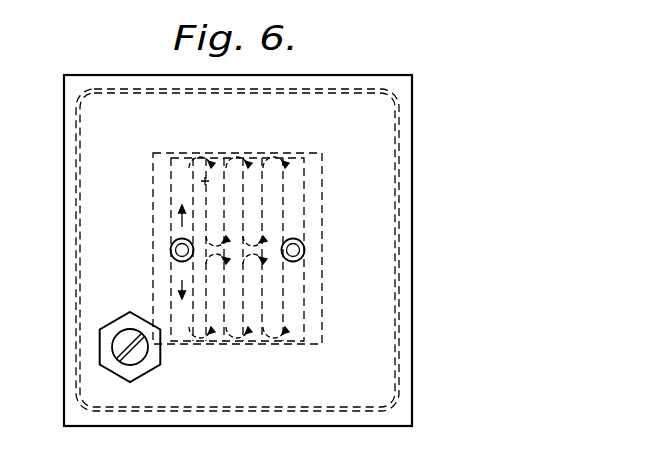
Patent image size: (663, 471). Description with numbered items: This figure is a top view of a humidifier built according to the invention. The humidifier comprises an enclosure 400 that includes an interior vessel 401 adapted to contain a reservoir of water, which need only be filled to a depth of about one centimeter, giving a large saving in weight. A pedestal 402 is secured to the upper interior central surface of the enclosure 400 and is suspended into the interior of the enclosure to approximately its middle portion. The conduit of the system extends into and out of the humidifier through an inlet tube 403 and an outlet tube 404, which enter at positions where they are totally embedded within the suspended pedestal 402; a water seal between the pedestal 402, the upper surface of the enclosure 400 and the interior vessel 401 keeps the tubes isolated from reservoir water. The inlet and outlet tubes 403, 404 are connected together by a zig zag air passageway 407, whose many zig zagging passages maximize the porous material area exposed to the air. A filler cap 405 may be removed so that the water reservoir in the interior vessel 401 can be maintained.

The enclosure 400 is at (412, 295).
The interior vessel 401 is at (393, 248).
The pedestal 402 is at (322, 344).
The inlet tube 403 is at (170, 250).
The outlet tube 404 is at (305, 250).
The filler cap 405 is at (100, 344).
The zig zag air passageway 407 is at (205, 183).